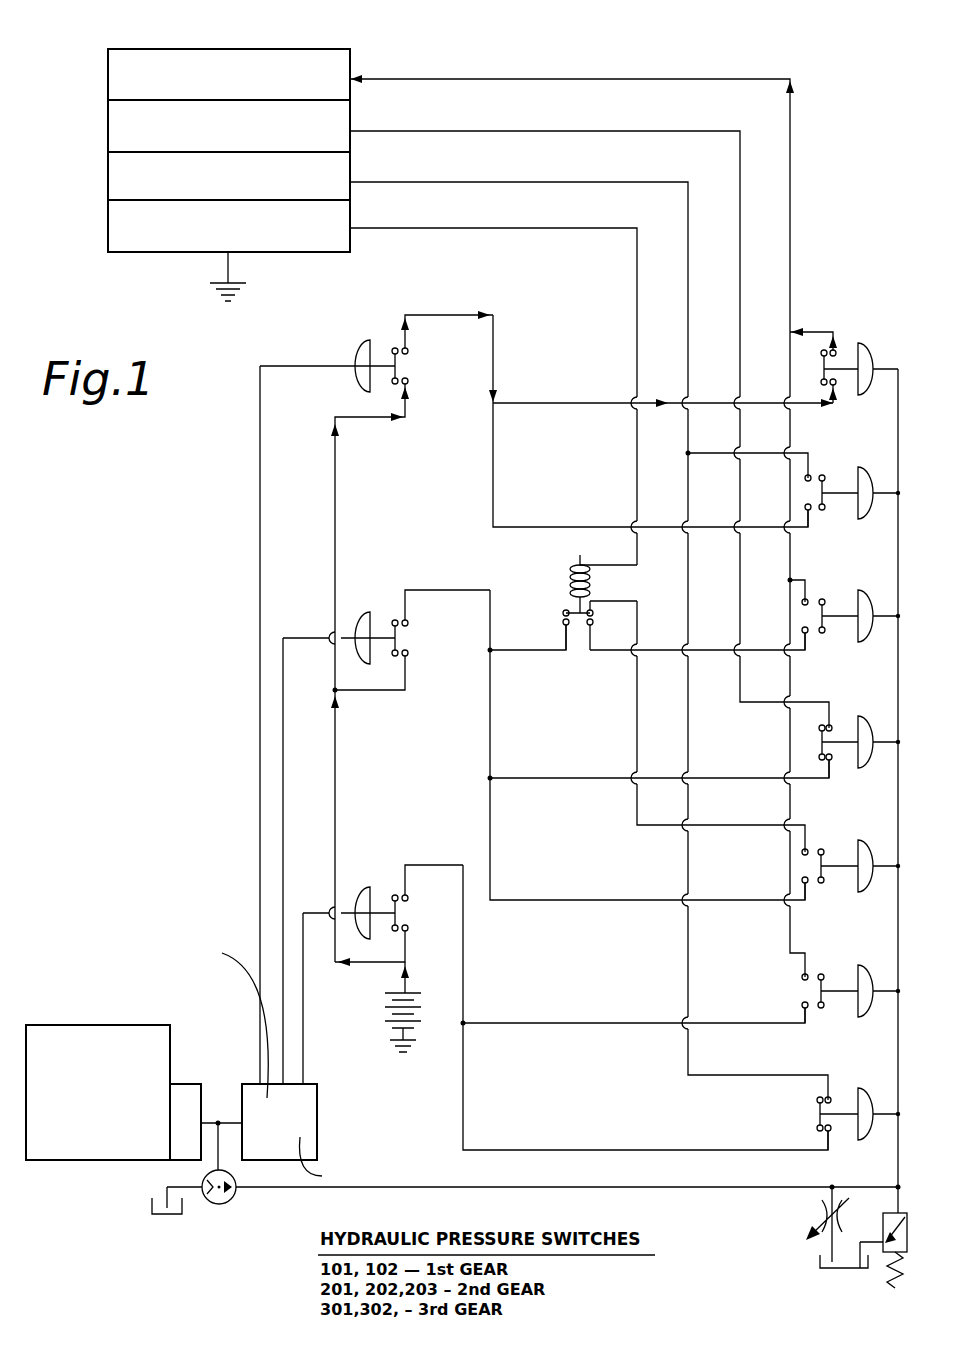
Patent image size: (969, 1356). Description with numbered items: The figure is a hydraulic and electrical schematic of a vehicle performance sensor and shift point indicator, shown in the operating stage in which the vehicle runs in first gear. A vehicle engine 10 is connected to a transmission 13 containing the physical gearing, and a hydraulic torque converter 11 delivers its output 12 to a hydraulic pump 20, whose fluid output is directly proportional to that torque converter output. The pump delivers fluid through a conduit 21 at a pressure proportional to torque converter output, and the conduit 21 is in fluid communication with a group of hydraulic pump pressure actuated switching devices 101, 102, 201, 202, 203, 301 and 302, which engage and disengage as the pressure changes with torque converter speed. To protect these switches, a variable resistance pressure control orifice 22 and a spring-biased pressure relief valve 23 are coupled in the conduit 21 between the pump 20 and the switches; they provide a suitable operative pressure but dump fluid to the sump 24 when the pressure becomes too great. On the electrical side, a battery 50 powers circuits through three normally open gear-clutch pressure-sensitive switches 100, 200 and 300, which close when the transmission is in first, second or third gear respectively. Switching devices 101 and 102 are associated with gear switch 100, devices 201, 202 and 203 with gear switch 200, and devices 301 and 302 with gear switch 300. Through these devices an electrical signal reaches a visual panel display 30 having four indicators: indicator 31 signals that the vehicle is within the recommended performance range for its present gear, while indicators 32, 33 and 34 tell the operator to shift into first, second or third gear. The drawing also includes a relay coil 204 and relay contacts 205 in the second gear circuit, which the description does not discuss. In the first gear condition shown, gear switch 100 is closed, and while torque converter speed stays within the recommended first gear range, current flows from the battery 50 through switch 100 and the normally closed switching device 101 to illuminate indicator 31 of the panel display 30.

The vehicle engine 10 is at (112, 1025).
The hydraulic torque converter 11 is at (192, 1084).
The output 12 is at (214, 1122).
The transmission 13 is at (248, 1084).
The hydraulic pump 20 is at (230, 1200).
The conduit 21 is at (386, 1188).
The variable resistance pressure control orifice 22 is at (824, 1216).
The spring-biased pressure relief valve 23 is at (888, 1270).
The sump 24 is at (174, 1216).
The visual panel display 30 is at (152, 42).
The indicator 31 is at (240, 88).
The indicator 32 is at (244, 142).
The indicator 33 is at (244, 193).
The indicator 34 is at (242, 241).
The battery 50 is at (384, 1010).
The gear-clutch pressure-sensitive switch 100 is at (362, 345).
The gear-clutch pressure-sensitive switch 200 is at (352, 618).
The gear-clutch pressure-sensitive switch 300 is at (350, 900).
The hydraulic pump pressure actuated switching device 101 is at (889, 322).
The hydraulic pump pressure actuated switching device 102 is at (866, 472).
The hydraulic pump pressure actuated switching device 201 is at (874, 573).
The hydraulic pump pressure actuated switching device 202 is at (882, 700).
The hydraulic pump pressure actuated switching device 203 is at (872, 820).
The hydraulic pump pressure actuated switching device 301 is at (873, 944).
The hydraulic pump pressure actuated switching device 302 is at (878, 1068).
The relay coil 204 is at (562, 578).
The relay contacts 205 is at (562, 615).